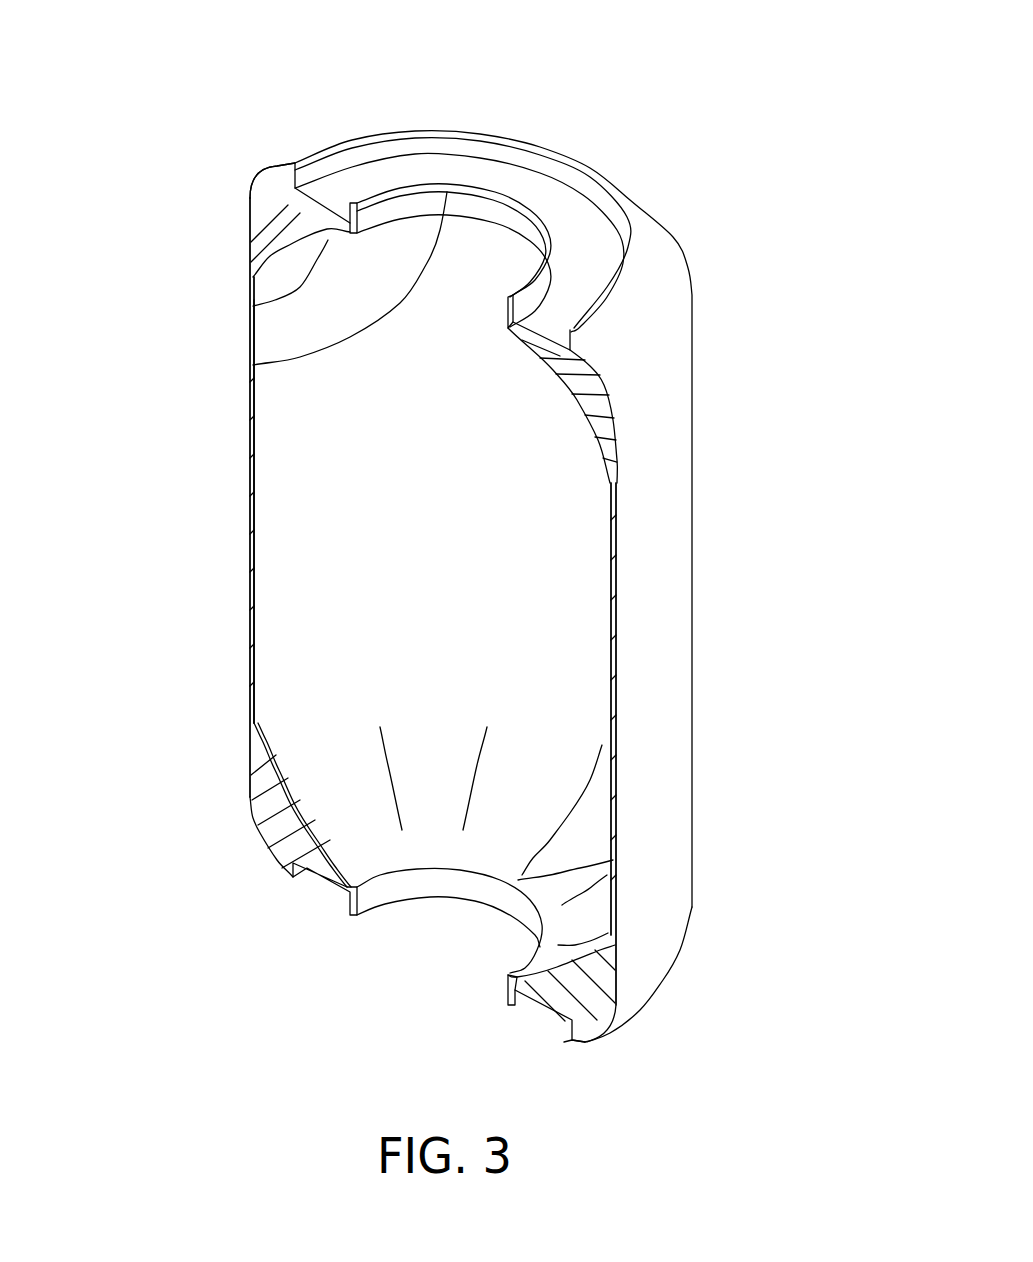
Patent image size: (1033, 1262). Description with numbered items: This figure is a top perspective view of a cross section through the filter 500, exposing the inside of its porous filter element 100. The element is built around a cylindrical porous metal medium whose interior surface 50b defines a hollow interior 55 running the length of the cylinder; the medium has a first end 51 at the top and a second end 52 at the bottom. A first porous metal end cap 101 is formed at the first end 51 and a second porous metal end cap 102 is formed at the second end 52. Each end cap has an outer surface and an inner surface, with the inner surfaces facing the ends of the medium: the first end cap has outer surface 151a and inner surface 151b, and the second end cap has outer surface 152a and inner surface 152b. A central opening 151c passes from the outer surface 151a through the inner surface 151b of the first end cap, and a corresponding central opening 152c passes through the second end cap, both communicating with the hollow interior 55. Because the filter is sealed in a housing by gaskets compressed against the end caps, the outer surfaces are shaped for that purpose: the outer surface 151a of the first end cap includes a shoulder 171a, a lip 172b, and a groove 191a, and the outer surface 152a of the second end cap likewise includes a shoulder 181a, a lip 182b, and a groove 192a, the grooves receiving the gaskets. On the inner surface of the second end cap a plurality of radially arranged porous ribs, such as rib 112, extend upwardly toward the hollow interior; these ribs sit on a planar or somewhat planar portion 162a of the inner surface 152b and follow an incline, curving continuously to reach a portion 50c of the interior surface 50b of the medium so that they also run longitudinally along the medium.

The filter 500 is at (238, 67).
The porous filter element 100 is at (708, 487).
The shoulder 171a is at (297, 162).
The first porous metal end cap 101 is at (273, 217).
The first end 51 is at (250, 273).
The inner surface 151b is at (257, 303).
The lip 172b is at (253, 372).
The central opening 151c is at (465, 253).
The outer surface 151a is at (610, 192).
The groove 191a is at (588, 270).
The interior surface 50b is at (257, 520).
The hollow interior 55 is at (472, 541).
The portion of the interior surface 50c is at (543, 748).
The porous rib 112 is at (570, 813).
The planar portion of the inner surface 162a is at (612, 862).
The second end 52 is at (615, 933).
The second porous metal end cap 102 is at (260, 775).
The inner surface 152b is at (317, 805).
The outer surface 152a is at (318, 878).
The central opening 152c is at (443, 918).
The lip 182b is at (507, 1003).
The groove 192a is at (538, 1013).
The shoulder 181a is at (564, 1042).